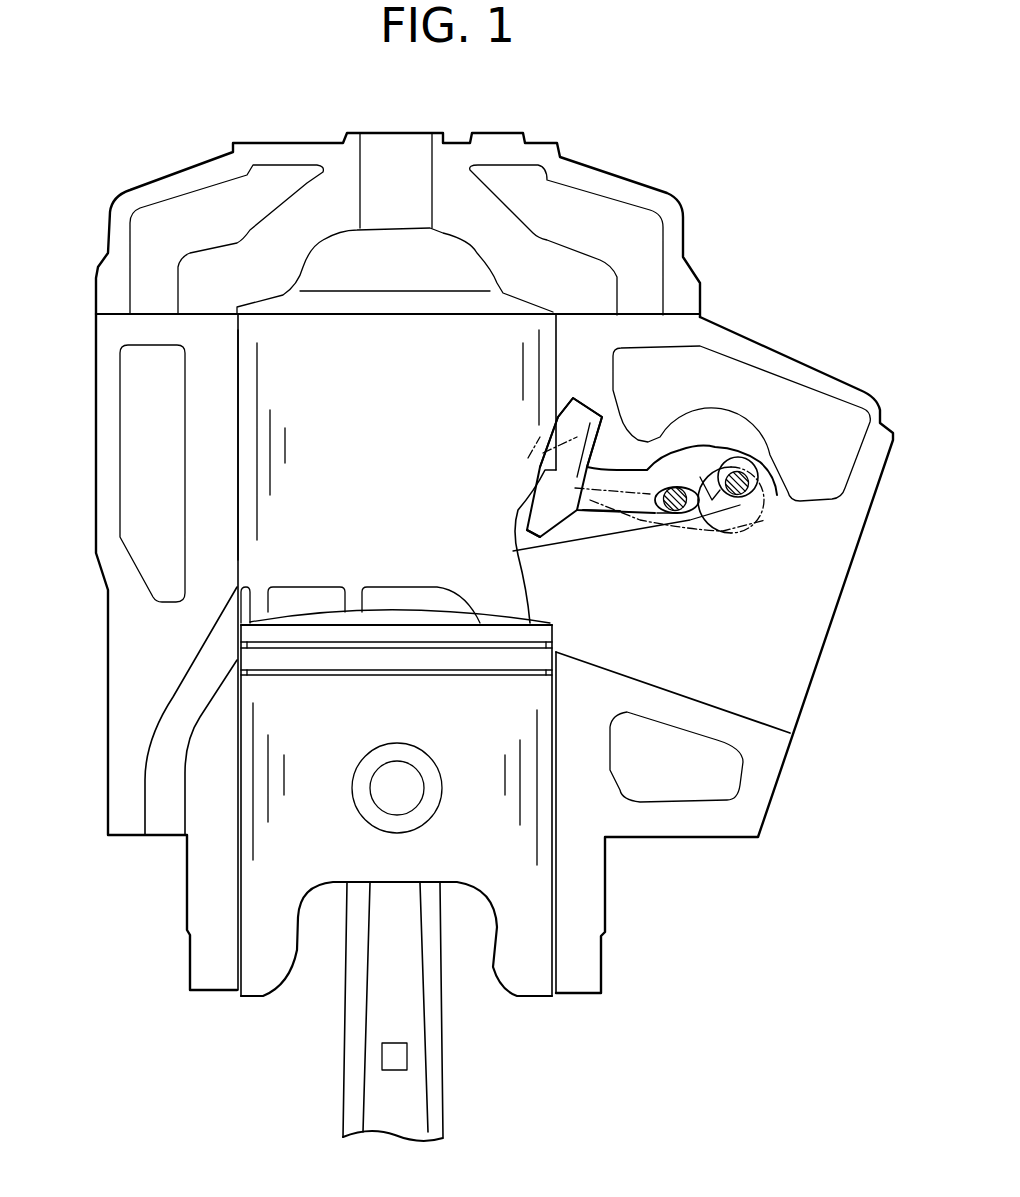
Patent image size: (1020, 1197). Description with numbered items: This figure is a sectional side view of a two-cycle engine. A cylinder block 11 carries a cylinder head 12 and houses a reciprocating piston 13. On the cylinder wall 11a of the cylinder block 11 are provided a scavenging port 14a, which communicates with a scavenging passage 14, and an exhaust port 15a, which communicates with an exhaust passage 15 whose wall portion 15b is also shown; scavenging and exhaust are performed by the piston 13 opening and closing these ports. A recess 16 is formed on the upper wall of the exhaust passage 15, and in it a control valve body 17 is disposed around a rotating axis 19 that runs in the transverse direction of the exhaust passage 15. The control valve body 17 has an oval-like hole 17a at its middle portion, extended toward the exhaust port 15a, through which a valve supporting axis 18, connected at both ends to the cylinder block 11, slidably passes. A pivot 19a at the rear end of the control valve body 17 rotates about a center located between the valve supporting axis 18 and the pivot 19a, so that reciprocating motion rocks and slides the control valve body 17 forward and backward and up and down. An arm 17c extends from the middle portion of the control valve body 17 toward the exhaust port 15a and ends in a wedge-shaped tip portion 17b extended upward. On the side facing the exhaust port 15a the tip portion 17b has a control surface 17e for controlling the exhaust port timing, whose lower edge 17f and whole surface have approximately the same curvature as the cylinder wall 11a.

The cylinder block 11 is at (108, 700).
The cylinder wall 11a is at (240, 400).
The cylinder head 12 is at (627, 180).
The piston 13 is at (260, 996).
The scavenging passage 14 is at (163, 822).
The scavenging port 14a is at (250, 593).
The exhaust passage 15 is at (783, 708).
The exhaust port 15a is at (513, 530).
The exhaust passage wall 15b is at (820, 650).
The recess 16 is at (715, 453).
The control valve body 17 is at (640, 532).
The oval-like hole 17a is at (667, 518).
The tip portion 17b is at (563, 538).
The arm 17c is at (595, 523).
The control surface 17e is at (537, 503).
The lower edge 17f is at (540, 537).
The valve supporting axis 18 is at (682, 515).
The rotating axis 19 is at (730, 527).
The pivot 19a is at (745, 470).